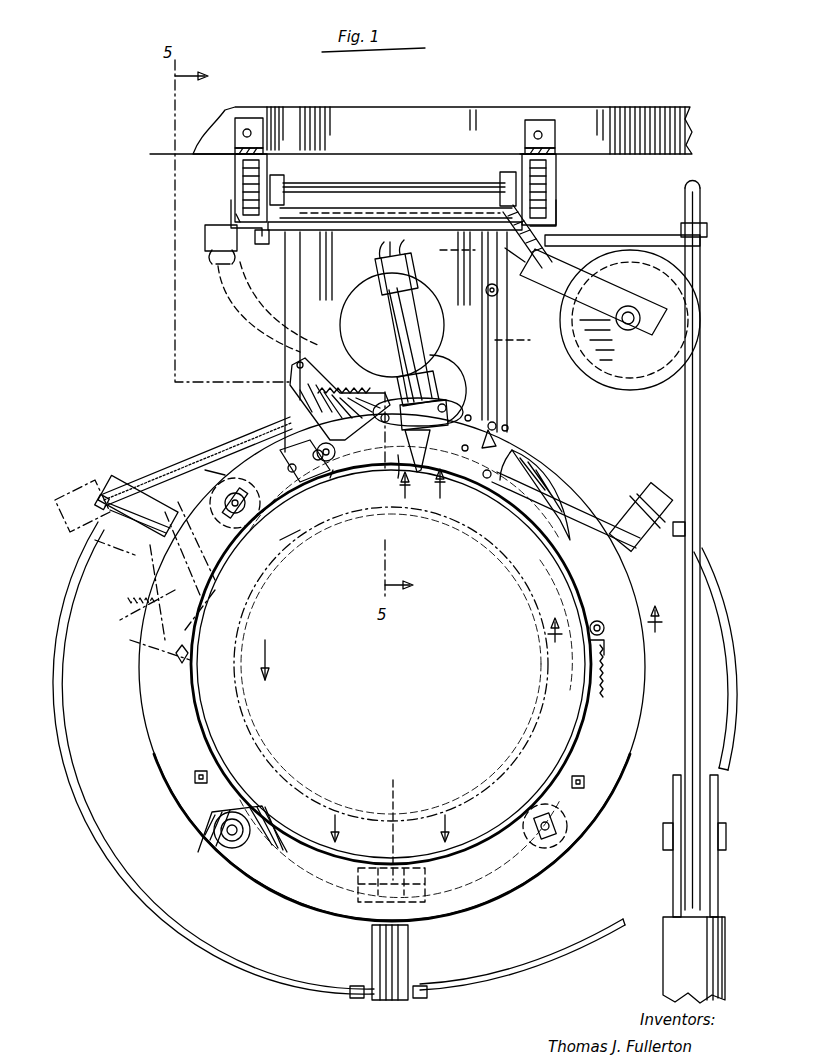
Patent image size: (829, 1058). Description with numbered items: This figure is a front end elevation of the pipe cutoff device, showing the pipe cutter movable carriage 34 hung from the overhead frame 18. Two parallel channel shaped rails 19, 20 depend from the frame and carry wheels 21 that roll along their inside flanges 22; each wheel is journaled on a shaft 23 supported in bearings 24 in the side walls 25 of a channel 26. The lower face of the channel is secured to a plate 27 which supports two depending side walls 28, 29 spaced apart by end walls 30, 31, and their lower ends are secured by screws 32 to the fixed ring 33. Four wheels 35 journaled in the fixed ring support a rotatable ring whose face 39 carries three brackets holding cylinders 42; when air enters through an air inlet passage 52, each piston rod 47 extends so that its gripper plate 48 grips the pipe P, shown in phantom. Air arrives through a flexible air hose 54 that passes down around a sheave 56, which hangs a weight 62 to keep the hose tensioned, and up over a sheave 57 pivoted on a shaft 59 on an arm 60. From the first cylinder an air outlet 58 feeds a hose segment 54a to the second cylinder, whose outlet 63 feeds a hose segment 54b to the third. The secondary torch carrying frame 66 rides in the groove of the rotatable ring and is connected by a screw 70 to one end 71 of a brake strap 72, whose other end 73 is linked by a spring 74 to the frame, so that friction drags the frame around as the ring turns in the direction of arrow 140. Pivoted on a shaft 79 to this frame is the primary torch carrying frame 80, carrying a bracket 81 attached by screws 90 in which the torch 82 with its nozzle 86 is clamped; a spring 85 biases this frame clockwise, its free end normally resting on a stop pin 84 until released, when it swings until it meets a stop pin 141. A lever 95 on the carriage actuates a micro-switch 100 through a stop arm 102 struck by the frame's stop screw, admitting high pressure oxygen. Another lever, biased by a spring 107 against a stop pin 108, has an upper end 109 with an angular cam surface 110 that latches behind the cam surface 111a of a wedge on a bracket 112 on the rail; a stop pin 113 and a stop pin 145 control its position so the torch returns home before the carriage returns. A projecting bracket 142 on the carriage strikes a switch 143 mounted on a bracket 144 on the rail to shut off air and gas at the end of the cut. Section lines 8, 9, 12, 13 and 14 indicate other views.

The section line 8 is at (389, 830).
The section line 9 is at (424, 492).
The section line 12 is at (252, 503).
The section line 13 is at (606, 635).
The section line 14 is at (548, 248).
The overhead frame 18 is at (456, 122).
The channel shaped rail 19 is at (555, 160).
The channel shaped rail 20 is at (181, 155).
The wheel 21 is at (243, 172).
The inside flange 22 is at (232, 215).
The shaft 23 is at (348, 183).
The bearing 24 is at (286, 180).
The side wall 25 is at (283, 172).
The channel 26 is at (380, 210).
The plate 27 is at (372, 230).
The side wall 28 is at (285, 342).
The side wall 29 is at (238, 312).
The end wall 30 is at (218, 282).
The end wall 31 is at (524, 351).
The screw 32 is at (262, 462).
The fixed ring 33 is at (548, 482).
The pipe cutter movable carriage 34 is at (190, 445).
The wheel 35 is at (232, 850).
The face 39 is at (464, 425).
The cylinder 42 is at (140, 530).
The piston rod 47 is at (270, 570).
The gripper plate 48 is at (545, 585).
The air inlet passage 52 is at (112, 496).
The flexible air hose 54 is at (700, 442).
The hose segment 54a is at (60, 600).
The hose segment 54b is at (727, 640).
The sheave 56 is at (718, 790).
The sheave 57 is at (690, 323).
The air outlet 58 is at (100, 512).
The shaft 59 is at (642, 318).
The arm 60 is at (610, 306).
The weight 62 is at (725, 968).
The outlet 63 is at (420, 998).
The secondary torch carrying frame 66 is at (520, 475).
The screw 70 is at (245, 503).
The end of brake strap 71 is at (333, 480).
The brake strap 72 is at (180, 712).
The end of brake strap 73 is at (596, 706).
The spring 74 is at (608, 675).
The shaft 79 is at (340, 470).
The primary torch carrying frame 80 is at (313, 452).
The bracket 81 is at (448, 395).
The torch 82 is at (412, 312).
The stop pin 84 is at (300, 362).
The spring 85 is at (318, 393).
The nozzle 86 is at (398, 478).
The screw 90 is at (385, 425).
The lever 95 is at (378, 345).
The micro-switch 100 is at (420, 365).
The stop arm 102 is at (395, 470).
The spring 107 is at (492, 338).
The stop pin 108 is at (512, 368).
The upper end of lever 109 is at (480, 262).
The angular cam surface 110 is at (508, 248).
The cam surface 111a is at (575, 236).
The bracket 112 is at (560, 240).
The stop pin 113 is at (508, 426).
The arrow 140 is at (265, 672).
The stop pin 141 is at (467, 441).
The projecting bracket 142 is at (262, 244).
The switch 143 is at (205, 238).
The bracket 144 is at (232, 218).
The stop pin 145 is at (498, 440).
The pipe P is at (500, 775).